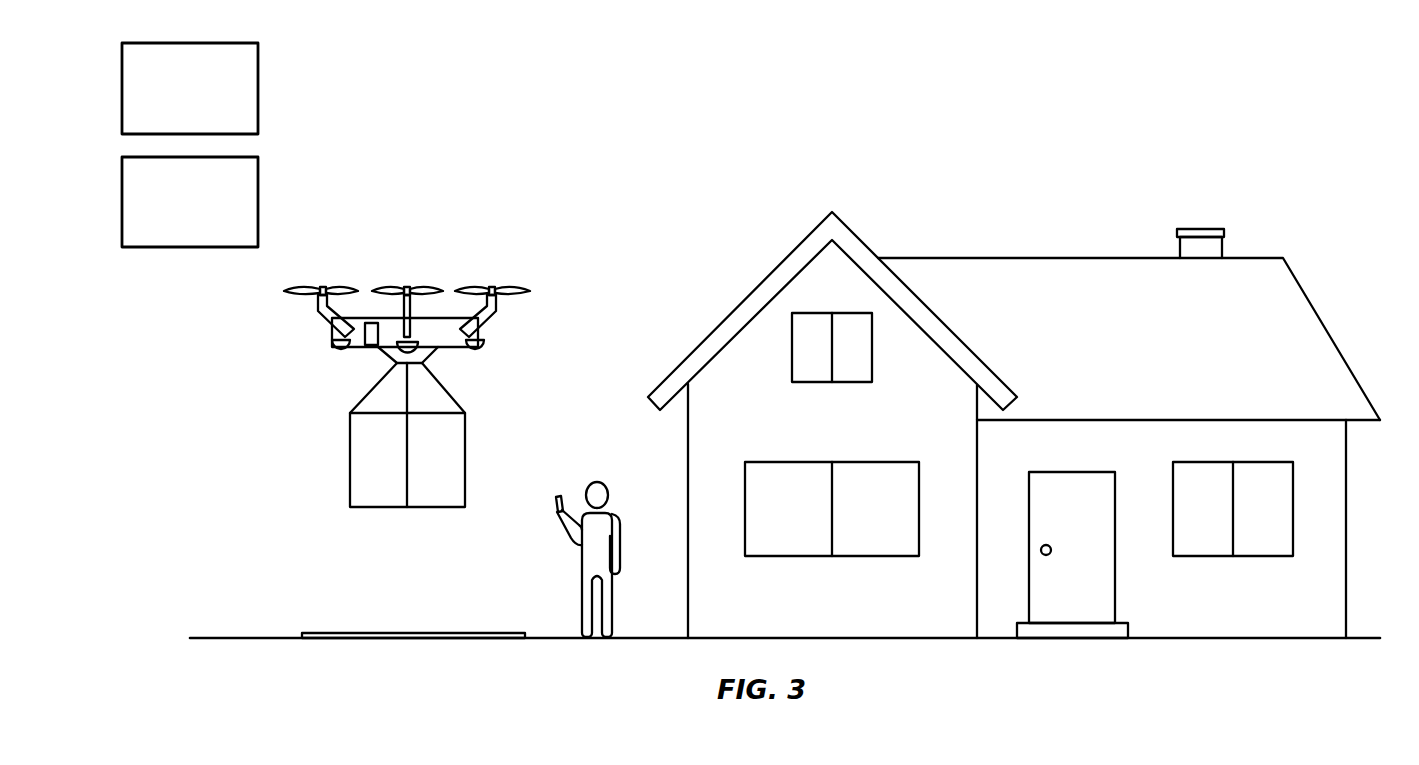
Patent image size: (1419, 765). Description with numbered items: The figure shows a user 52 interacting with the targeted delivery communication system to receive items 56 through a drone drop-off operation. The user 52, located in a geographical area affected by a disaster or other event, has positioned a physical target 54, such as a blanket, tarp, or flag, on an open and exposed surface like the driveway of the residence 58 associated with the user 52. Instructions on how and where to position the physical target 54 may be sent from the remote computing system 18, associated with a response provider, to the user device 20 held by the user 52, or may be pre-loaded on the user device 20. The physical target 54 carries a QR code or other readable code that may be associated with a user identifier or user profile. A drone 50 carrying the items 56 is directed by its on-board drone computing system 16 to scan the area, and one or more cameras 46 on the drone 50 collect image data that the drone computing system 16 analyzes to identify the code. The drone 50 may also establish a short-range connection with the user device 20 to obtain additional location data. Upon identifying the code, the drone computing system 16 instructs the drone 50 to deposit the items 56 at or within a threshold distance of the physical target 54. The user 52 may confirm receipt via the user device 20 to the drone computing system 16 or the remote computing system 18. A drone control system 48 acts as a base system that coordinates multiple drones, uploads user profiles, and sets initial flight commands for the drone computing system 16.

The drone computing system 16 is at (407, 336).
The remote computing system 18 is at (258, 198).
The user device 20 is at (558, 497).
The camera 46 is at (478, 350).
The drone control system 48 is at (258, 84).
The drone 50 is at (407, 292).
The user 52 is at (580, 547).
The physical target 54 is at (413, 633).
The items 56 is at (465, 455).
The residence 58 is at (1042, 258).